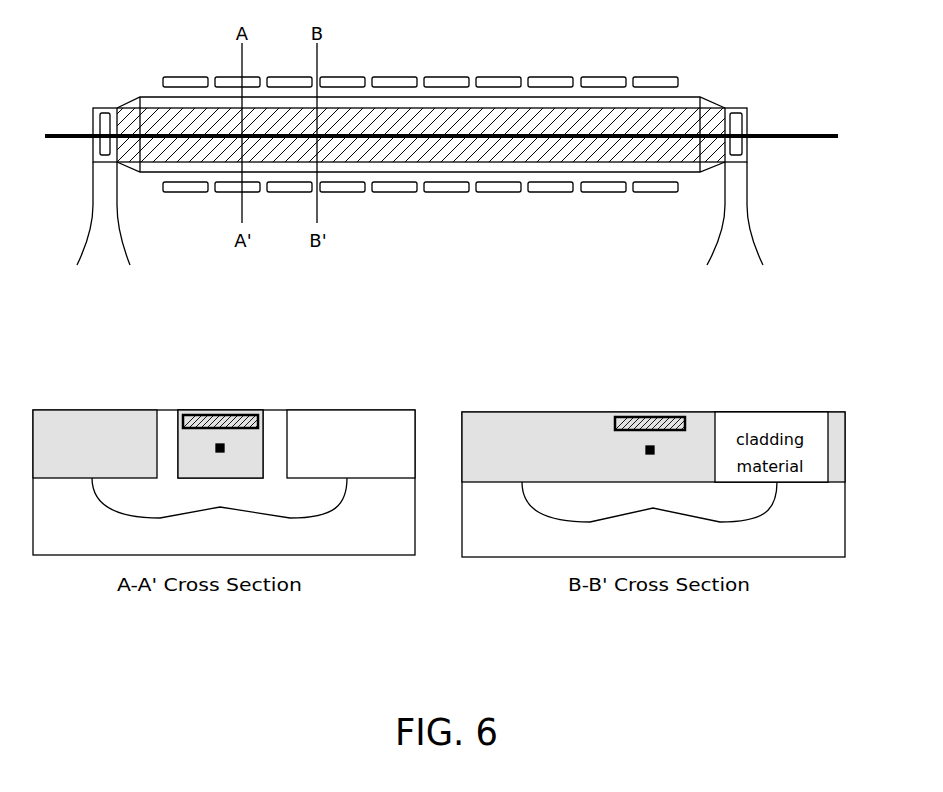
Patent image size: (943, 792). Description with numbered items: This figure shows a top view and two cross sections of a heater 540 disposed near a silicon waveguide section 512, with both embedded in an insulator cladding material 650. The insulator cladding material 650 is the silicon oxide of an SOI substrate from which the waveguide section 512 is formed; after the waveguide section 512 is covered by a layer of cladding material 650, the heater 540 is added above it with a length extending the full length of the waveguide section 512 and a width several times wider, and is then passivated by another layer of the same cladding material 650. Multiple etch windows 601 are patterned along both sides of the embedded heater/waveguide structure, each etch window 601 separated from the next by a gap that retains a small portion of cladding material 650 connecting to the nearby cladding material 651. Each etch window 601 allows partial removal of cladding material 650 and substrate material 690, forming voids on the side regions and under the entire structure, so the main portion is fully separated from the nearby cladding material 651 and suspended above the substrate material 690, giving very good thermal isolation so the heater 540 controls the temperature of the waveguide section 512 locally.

The waveguide section 512 is at (767, 134).
The heater 540 is at (707, 122).
The etch window 601 is at (552, 76).
The insulator cladding material 650 is at (667, 99).
The nearby cladding material 651 is at (67, 418).
The substrate material 690 is at (245, 544).